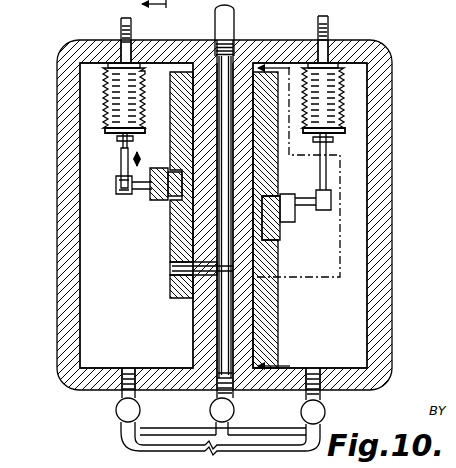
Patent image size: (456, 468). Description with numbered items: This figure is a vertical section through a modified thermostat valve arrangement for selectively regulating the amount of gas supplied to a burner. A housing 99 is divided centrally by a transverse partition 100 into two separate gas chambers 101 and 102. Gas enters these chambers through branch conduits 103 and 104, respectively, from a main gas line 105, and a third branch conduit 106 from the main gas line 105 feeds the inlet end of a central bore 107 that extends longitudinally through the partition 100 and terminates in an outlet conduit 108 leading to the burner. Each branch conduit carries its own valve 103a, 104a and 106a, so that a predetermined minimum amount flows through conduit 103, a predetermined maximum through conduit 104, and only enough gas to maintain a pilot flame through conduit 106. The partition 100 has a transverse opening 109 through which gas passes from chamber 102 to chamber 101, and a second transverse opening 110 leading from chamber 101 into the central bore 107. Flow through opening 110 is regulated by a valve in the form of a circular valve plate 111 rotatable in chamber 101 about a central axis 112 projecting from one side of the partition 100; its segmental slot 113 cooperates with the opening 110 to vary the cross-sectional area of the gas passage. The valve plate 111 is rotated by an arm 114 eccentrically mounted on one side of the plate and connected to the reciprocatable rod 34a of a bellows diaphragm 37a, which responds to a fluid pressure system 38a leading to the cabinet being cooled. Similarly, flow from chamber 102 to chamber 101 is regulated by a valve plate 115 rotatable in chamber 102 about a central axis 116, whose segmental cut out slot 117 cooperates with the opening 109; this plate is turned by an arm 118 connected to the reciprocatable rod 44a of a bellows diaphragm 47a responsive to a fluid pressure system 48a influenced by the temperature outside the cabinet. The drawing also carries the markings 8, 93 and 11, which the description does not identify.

The direction arrow 8 is at (141, 6).
The operating lever 93 is at (182, 7).
The housing 99 is at (383, 185).
The transverse partition 100 is at (205, 343).
The gas chamber 101 is at (136, 215).
The gas chamber 102 is at (310, 215).
The branch conduit 103 is at (125, 433).
The valve 103a is at (116, 410).
The branch conduit 104 is at (278, 431).
The valve 104a is at (327, 413).
The main gas line 105 is at (206, 452).
The branch conduit 106 is at (196, 399).
The valve 106a is at (244, 410).
The central bore 107 is at (214, 70).
The outlet conduit 108 is at (236, 23).
The transverse opening 109 is at (225, 316).
The second transverse opening 110 is at (205, 276).
The valve plate 111 is at (177, 119).
The central axis 112 is at (175, 210).
The segmental slot 113 is at (180, 265).
The arm 114 is at (145, 196).
The valve plate 115 is at (299, 183).
The central axis 116 is at (279, 248).
The segmental cut out slot 117 is at (279, 313).
The arm 118 is at (294, 200).
The flow arrows 11 is at (279, 217).
The reciprocatable rod 34a is at (121, 157).
The bellows diaphragm 37a is at (105, 95).
The fluid pressure system 38a is at (120, 24).
The reciprocatable rod 44a is at (324, 192).
The bellows diaphragm 47a is at (345, 101).
The fluid pressure system 48a is at (330, 24).